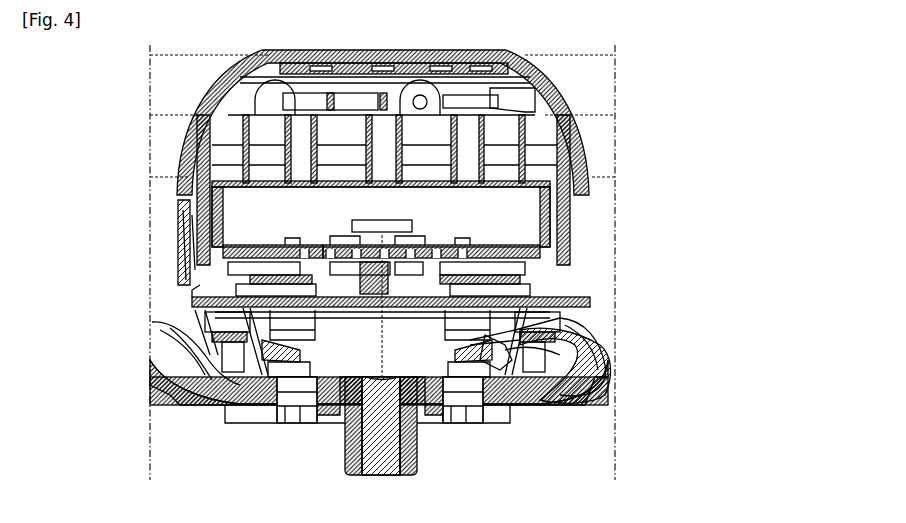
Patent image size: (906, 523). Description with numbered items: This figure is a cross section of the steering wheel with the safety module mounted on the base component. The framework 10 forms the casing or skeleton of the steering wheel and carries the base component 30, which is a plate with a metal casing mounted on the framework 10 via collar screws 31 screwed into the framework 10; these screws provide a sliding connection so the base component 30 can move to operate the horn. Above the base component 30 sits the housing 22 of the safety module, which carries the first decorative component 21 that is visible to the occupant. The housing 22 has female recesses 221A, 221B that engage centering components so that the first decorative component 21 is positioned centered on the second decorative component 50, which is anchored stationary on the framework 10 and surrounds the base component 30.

The first decorative component 21 is at (198, 110).
The housing 22 is at (212, 205).
The second decorative component 50 is at (190, 266).
The female recess 221A is at (198, 283).
The female recess 221B is at (580, 247).
The base component 30 is at (565, 310).
The collar screw 31 is at (505, 353).
The framework 10 is at (178, 394).